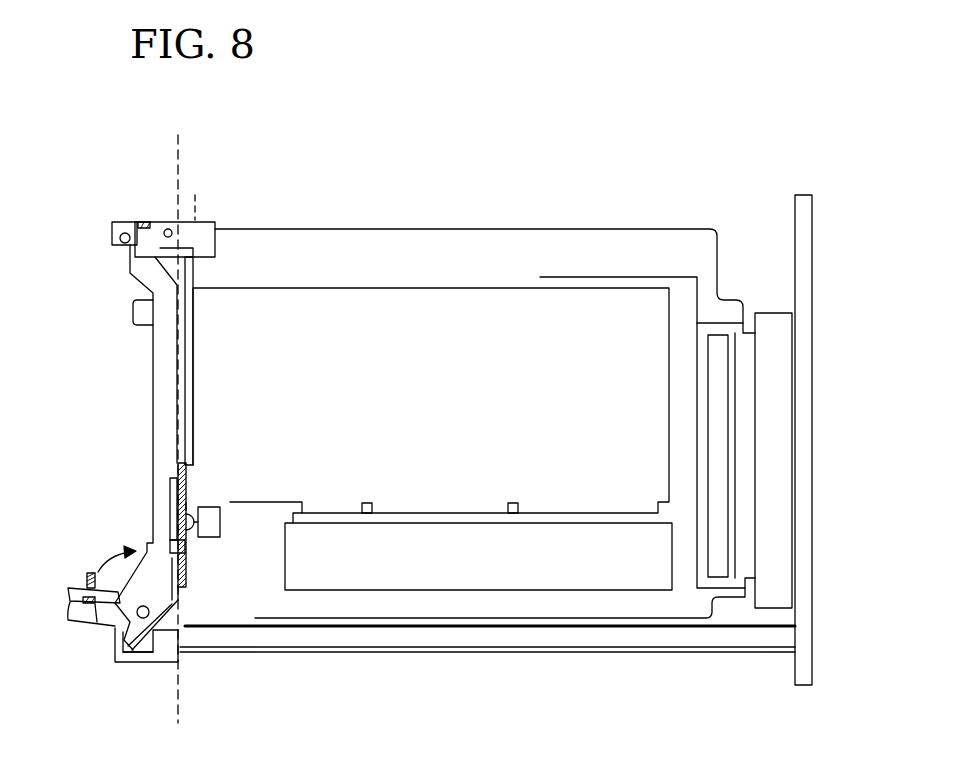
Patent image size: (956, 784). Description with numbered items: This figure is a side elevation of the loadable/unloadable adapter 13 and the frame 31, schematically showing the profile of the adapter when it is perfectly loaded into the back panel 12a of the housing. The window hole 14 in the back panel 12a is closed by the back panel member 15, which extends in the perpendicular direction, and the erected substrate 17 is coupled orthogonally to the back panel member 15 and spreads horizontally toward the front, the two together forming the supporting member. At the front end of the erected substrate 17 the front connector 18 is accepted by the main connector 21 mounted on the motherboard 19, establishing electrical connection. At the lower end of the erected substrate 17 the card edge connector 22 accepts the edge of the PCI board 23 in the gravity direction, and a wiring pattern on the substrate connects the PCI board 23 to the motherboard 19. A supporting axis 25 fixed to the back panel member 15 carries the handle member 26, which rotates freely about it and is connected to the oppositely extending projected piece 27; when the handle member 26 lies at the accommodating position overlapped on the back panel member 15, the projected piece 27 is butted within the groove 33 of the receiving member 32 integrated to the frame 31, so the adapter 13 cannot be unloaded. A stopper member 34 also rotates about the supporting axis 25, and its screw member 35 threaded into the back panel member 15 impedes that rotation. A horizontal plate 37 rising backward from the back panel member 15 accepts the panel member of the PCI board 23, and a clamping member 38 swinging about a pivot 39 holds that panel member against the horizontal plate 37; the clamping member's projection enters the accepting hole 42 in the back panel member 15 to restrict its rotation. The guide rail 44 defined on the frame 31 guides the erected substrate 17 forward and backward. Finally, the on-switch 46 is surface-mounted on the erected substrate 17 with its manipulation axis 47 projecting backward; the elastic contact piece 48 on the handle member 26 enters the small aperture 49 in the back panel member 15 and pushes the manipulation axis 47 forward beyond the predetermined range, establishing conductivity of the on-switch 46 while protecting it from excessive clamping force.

The back panel 12a is at (176, 172).
The loadable/unloadable adapter 13 is at (118, 358).
The window hole 14 is at (172, 221).
The back panel member 15 is at (185, 360).
The erected substrate 17 is at (662, 228).
The front connector 18 is at (720, 388).
The motherboard 19 is at (797, 195).
The main connector 21 is at (772, 313).
The card edge connector 22 is at (567, 591).
The PCI board 23 is at (408, 287).
The supporting axis 25 is at (153, 613).
The handle member 26 is at (155, 433).
The projected piece 27 is at (165, 657).
The frame 31 is at (684, 652).
The receiving member 32 is at (163, 660).
The groove 33 is at (130, 650).
The stopper member 34 is at (87, 584).
The screw member 35 is at (73, 622).
The horizontal plate 37 is at (173, 260).
The clamping member 38 is at (112, 222).
The pivot 39 is at (122, 243).
The accepting hole 42 is at (173, 234).
The guide rail 44 is at (432, 617).
The on-switch 46 is at (220, 537).
The manipulation axis 47 is at (193, 503).
The contact piece 48 is at (177, 512).
The small aperture 49 is at (175, 500).